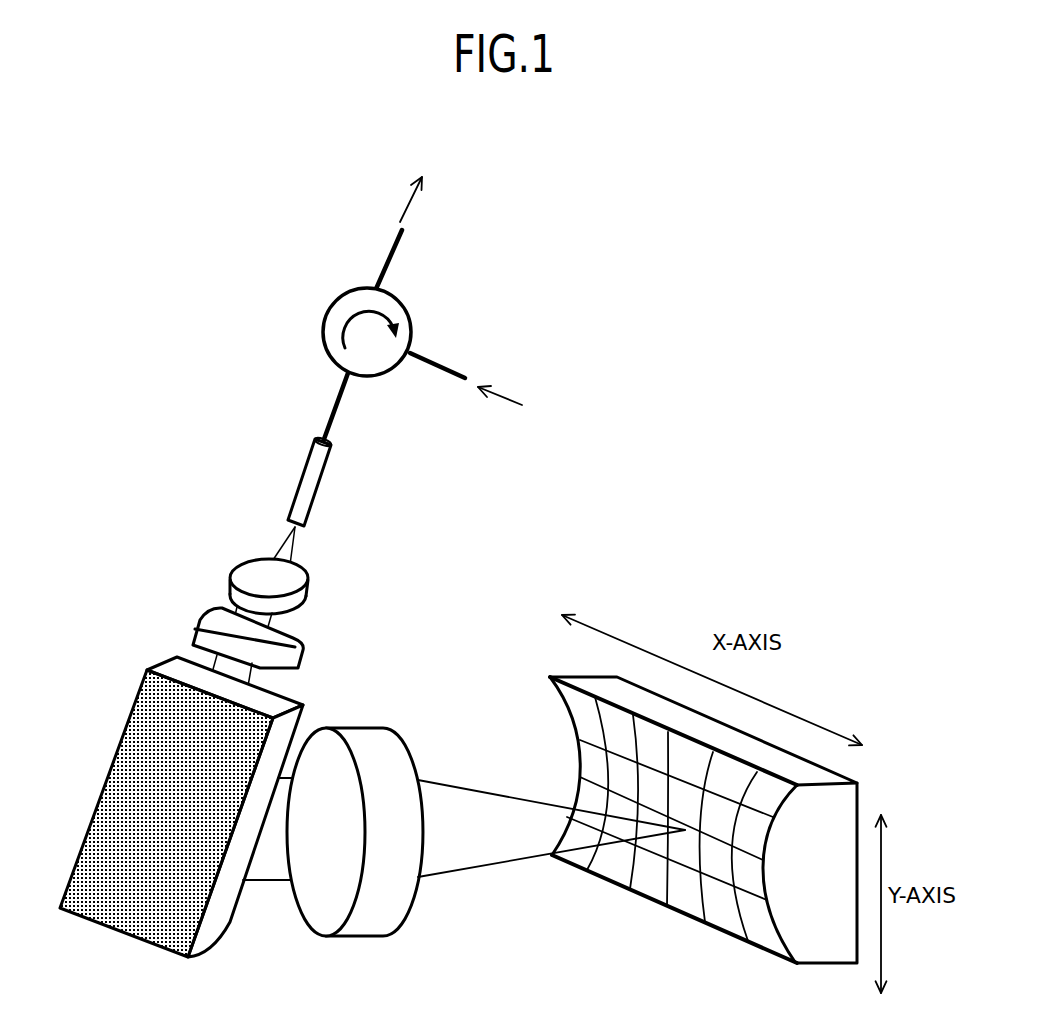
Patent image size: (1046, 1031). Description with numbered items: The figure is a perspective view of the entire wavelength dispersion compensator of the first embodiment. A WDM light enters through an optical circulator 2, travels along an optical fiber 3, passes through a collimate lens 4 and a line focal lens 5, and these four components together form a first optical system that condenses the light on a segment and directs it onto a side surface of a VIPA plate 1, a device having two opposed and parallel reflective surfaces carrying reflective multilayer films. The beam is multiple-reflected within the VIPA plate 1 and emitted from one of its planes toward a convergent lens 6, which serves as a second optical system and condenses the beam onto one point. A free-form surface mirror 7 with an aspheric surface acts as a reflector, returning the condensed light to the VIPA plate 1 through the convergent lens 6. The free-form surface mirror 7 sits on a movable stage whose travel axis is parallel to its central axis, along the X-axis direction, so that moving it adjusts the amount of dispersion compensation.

The VIPA plate 1 is at (130, 708).
The optical circulator 2 is at (327, 310).
The optical fiber 3 is at (303, 473).
The collimate lens 4 is at (230, 580).
The line focal lens 5 is at (195, 632).
The convergent lens 6 is at (368, 727).
The free-form surface mirror 7 is at (678, 913).